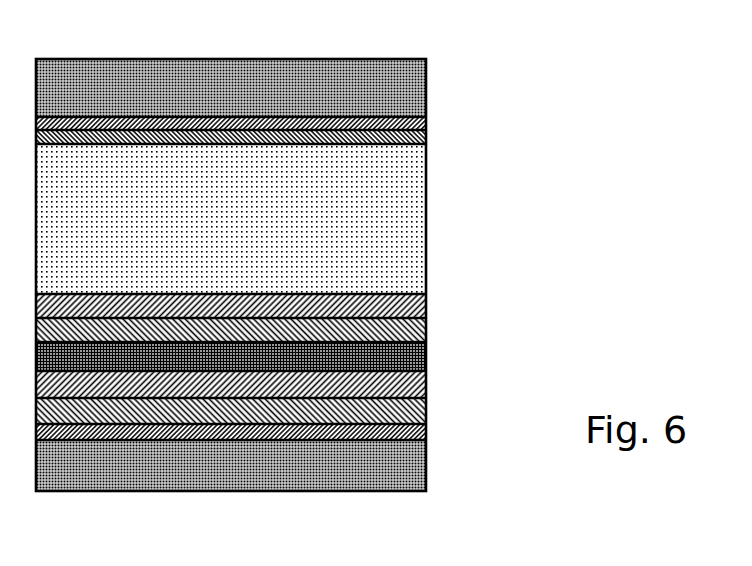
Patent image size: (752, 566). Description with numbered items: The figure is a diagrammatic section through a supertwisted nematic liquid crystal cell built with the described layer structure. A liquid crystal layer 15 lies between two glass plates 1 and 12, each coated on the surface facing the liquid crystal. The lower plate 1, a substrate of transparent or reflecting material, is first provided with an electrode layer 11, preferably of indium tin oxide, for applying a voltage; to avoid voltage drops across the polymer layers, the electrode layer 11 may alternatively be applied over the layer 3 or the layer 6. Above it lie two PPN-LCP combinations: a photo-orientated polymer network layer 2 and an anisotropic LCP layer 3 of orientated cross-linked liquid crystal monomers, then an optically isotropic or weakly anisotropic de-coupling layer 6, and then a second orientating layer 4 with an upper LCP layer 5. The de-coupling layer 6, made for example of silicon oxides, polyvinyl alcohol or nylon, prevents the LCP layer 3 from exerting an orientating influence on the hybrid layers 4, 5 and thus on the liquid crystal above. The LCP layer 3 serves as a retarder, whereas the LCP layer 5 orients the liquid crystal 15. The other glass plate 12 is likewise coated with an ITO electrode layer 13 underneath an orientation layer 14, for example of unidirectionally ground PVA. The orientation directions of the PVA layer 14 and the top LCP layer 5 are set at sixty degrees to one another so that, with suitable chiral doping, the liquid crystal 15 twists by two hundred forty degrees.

The substrate 1 is at (282, 482).
The photo-orientated polymer network layer 2 is at (426, 423).
The anisotropic layer of orientated cross-linked liquid crystal monomers 3 is at (426, 388).
The upper orientating layer 4 is at (426, 320).
The upper LCP layer 5 is at (385, 293).
The de-coupling layer 6 is at (427, 350).
The electrode layer 11 is at (332, 433).
The glass plate 12 is at (172, 80).
The ITO electrode layer 13 is at (260, 119).
The orientation layer 14 is at (352, 130).
The liquid crystal layer 15 is at (405, 198).